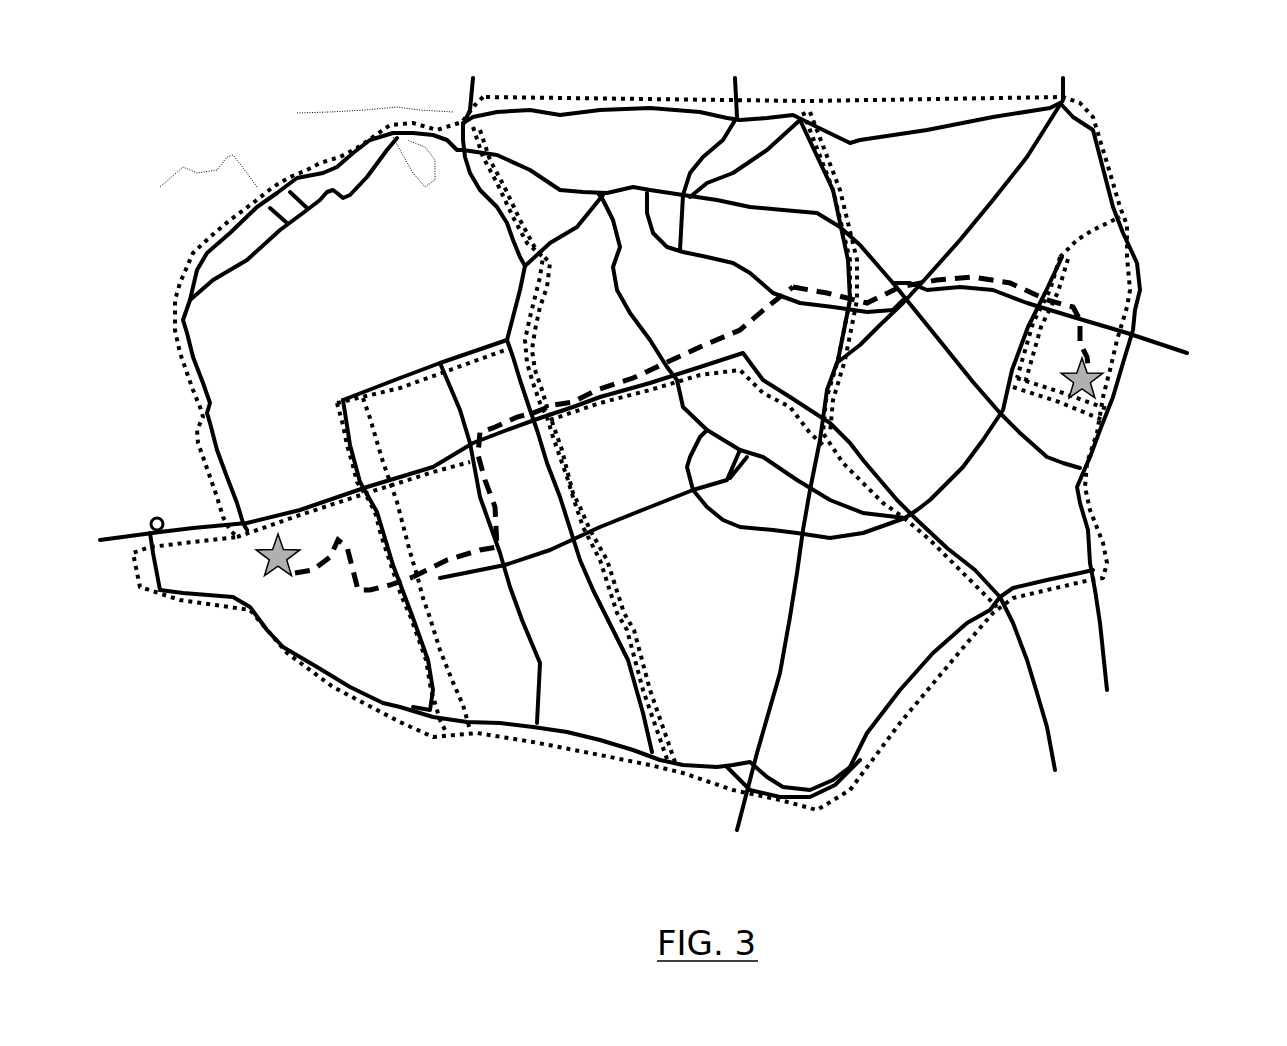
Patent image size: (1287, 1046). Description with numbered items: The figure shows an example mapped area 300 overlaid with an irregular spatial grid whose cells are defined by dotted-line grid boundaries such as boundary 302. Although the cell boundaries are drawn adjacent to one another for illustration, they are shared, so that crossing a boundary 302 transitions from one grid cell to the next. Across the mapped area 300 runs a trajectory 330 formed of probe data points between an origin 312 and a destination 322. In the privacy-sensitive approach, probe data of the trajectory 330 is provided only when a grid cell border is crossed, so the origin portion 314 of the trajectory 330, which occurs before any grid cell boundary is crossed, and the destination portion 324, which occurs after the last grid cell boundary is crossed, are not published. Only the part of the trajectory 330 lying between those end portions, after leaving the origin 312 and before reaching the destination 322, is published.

The mapped area 300 is at (1108, 79).
The boundary 302 is at (867, 101).
The origin 312 is at (1104, 408).
The origin portion 314 is at (1082, 304).
The destination 322 is at (268, 552).
The destination portion 324 is at (328, 550).
The trajectory 330 is at (487, 420).